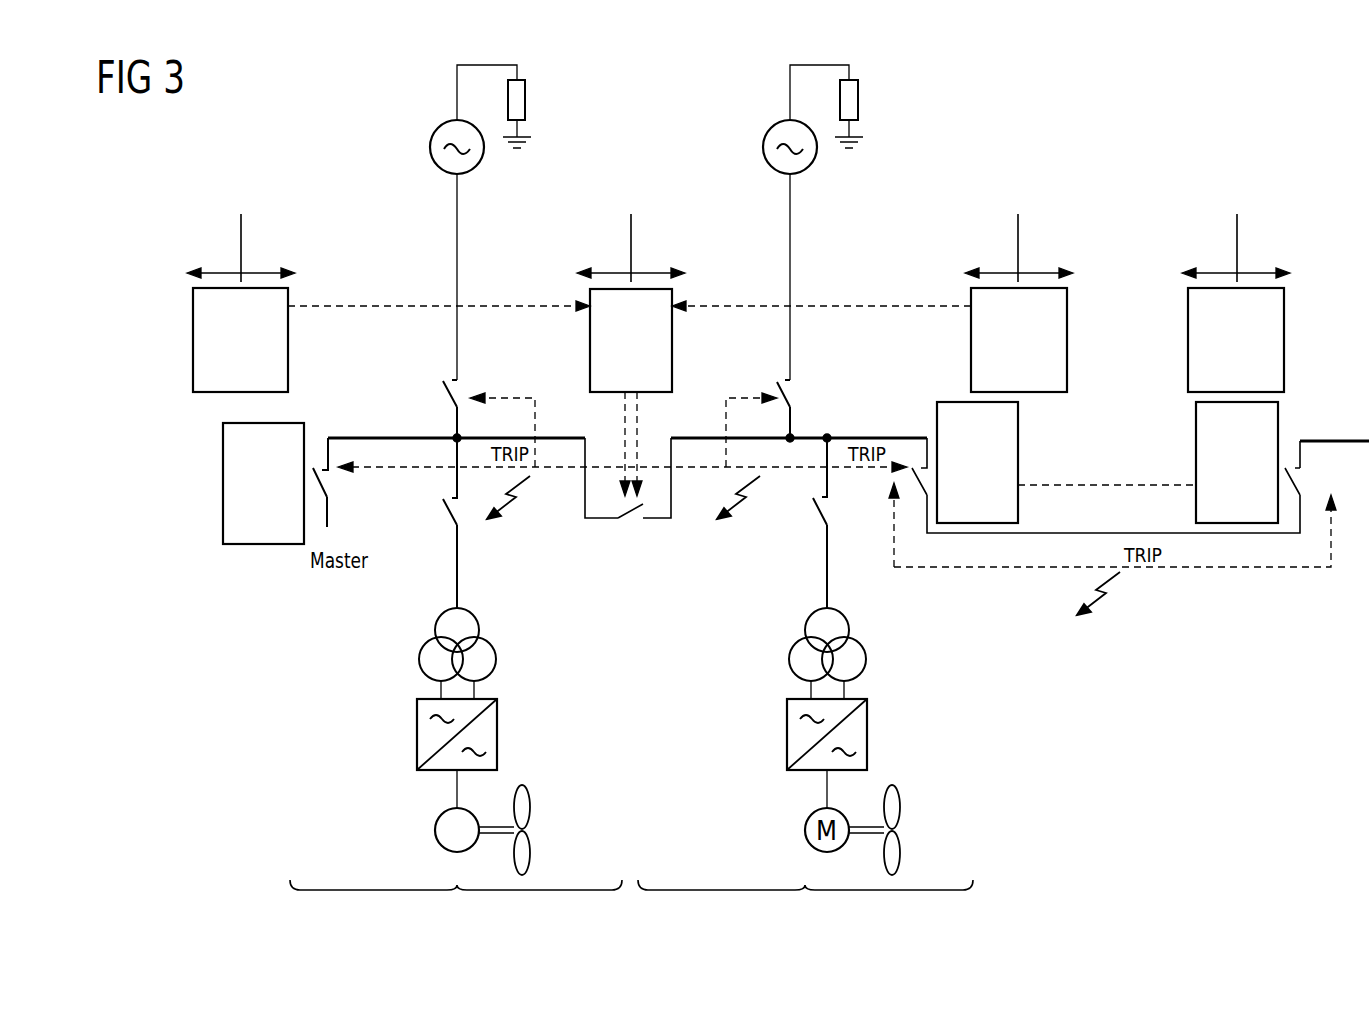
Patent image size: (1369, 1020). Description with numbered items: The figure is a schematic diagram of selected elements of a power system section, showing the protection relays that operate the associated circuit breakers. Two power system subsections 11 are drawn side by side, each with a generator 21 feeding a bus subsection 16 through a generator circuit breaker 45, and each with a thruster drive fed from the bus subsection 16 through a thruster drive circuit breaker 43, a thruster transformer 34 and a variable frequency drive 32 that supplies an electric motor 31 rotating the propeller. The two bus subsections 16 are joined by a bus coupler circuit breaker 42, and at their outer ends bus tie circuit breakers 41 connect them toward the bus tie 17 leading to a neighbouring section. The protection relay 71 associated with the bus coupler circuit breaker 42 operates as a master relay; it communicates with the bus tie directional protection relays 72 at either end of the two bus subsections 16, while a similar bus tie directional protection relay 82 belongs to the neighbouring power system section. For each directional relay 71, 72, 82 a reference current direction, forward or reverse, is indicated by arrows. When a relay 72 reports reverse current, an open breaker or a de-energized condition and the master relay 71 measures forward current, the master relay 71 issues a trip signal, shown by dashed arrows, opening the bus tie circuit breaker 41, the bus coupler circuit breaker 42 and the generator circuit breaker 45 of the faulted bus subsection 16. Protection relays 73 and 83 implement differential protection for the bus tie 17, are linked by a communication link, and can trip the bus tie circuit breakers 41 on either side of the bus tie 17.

The power system subsection 11 is at (631, 905).
The bus subsection 16 is at (370, 435).
The bus tie 17 is at (1045, 536).
The generator 21 is at (432, 141).
The electric motor 31 is at (435, 830).
The variable frequency drive 32 is at (417, 735).
The thruster transformer 34 is at (418, 660).
The bus tie circuit breaker 41 is at (329, 486).
The bus coupler circuit breaker 42 is at (630, 520).
The thruster drive circuit breaker 43 is at (440, 517).
The generator circuit breaker 45 is at (441, 393).
The protection relay 71 is at (672, 340).
The bus tie directional protection relay 72 is at (288, 340).
The protection relay 73 is at (1018, 444).
The bus tie directional protection relay 82 is at (1284, 340).
The protection relay 83 is at (1196, 447).